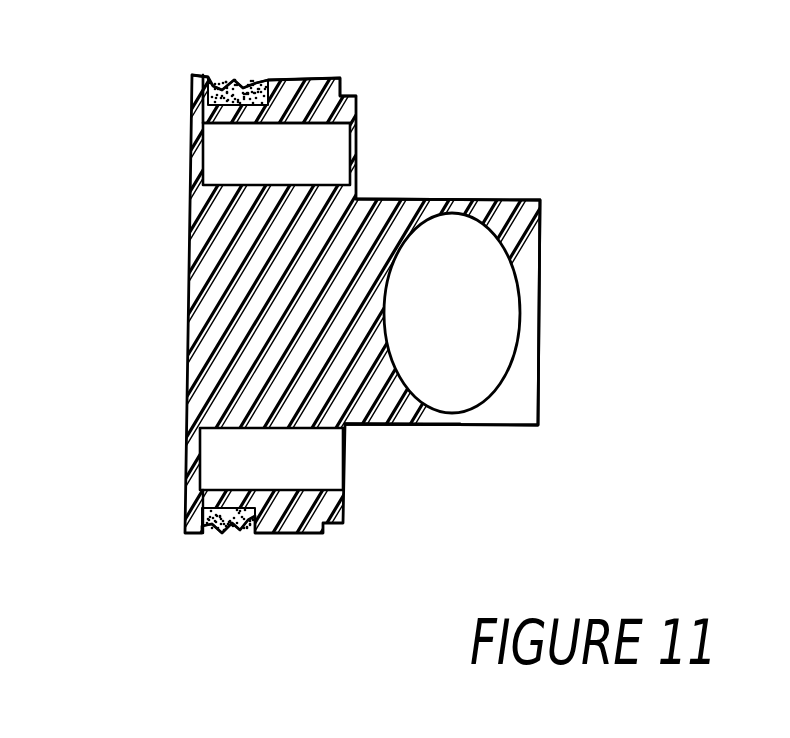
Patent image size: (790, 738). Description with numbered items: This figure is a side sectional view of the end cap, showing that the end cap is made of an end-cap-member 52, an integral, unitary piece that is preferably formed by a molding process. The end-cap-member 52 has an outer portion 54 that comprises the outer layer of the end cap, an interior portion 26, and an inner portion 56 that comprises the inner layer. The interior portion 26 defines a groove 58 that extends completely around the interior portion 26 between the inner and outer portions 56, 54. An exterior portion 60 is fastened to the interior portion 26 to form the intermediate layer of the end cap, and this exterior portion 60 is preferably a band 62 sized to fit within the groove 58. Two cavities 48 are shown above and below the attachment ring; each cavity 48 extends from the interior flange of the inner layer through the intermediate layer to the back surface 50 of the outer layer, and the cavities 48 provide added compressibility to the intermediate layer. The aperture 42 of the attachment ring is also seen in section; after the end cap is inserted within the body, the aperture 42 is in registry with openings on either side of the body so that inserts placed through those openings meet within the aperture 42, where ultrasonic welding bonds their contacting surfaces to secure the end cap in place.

The interior portion 26 is at (275, 340).
The aperture 42 is at (503, 305).
The cavity 48 is at (343, 157).
The back surface 50 is at (190, 150).
The end-cap-member 52 is at (417, 200).
The outer portion 54 is at (190, 252).
The inner portion 56 is at (385, 400).
The groove 58 is at (305, 78).
The exterior portion 60 is at (238, 80).
The band 62 is at (233, 525).